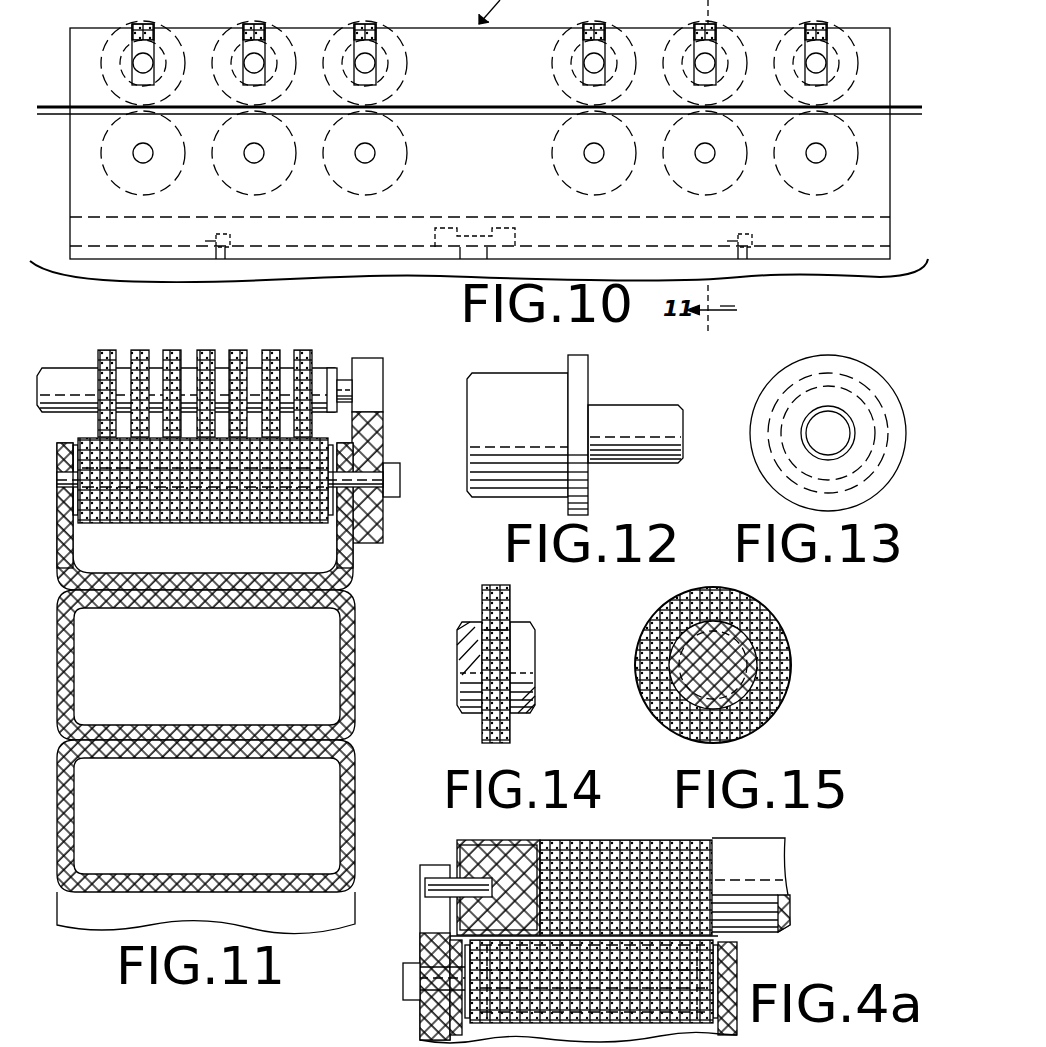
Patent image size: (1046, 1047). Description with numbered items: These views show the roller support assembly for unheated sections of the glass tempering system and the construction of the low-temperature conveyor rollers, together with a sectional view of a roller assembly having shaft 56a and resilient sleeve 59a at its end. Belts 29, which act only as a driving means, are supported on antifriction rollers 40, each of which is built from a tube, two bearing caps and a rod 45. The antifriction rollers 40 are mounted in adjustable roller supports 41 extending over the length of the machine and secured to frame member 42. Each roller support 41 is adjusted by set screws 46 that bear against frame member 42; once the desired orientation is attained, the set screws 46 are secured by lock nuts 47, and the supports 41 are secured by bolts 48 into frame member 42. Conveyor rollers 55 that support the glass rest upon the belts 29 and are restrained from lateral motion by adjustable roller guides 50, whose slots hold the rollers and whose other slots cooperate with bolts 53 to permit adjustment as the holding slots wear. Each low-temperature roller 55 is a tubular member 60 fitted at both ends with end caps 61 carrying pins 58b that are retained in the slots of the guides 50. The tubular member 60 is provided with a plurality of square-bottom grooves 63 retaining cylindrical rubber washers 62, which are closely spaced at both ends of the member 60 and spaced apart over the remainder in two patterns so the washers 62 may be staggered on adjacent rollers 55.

In FIG. 10, the belt 29 is at (912, 107).
In FIG. 11, the belt 29 is at (338, 434).
In FIG. 10, the roller support 41 is at (890, 232).
In FIG. 10, the set screw 46 is at (232, 238).
In FIG. 10, the lock nut 47 is at (205, 241).
In FIG. 10, the bolt 48 is at (515, 236).
In FIG. 11, the tubular member 60 is at (64, 368).
In FIG. 14, the tubular member 60 is at (518, 660).
In FIG. 15, the tubular member 60 is at (755, 687).
In FIG. 11, the rubber washer 62 is at (172, 360).
In FIG. 14, the rubber washer 62 is at (502, 602).
In FIG. 15, the rubber washer 62 is at (783, 653).
In FIG. 11, the conveyor roller 55 is at (297, 337).
In FIG. 11, the end cap 61 is at (338, 362).
In FIG. 12, the end cap 61 is at (612, 376).
In FIG. 13, the end cap 61 is at (877, 357).
In FIG. 11, the pin 58b is at (352, 390).
In FIG. 12, the pin 58b is at (658, 413).
In FIG. 13, the pin 58b is at (833, 443).
In FIG. 11, the rod 45 is at (343, 476).
In FIG. 11, the bolt 53 is at (392, 480).
In FIG. 11, the roller guide 50 is at (375, 525).
In FIG. 11, the antifriction roller 40 is at (313, 525).
In FIG. 11, the frame member 42 is at (345, 678).
In FIG. 14, the square-bottom groove 63 is at (510, 630).
In FIG. 15, the square-bottom groove 63 is at (745, 648).
In FIG. 4a, the roller 59a is at (623, 845).
In FIG. 4a, the roller shaft 56a is at (768, 853).